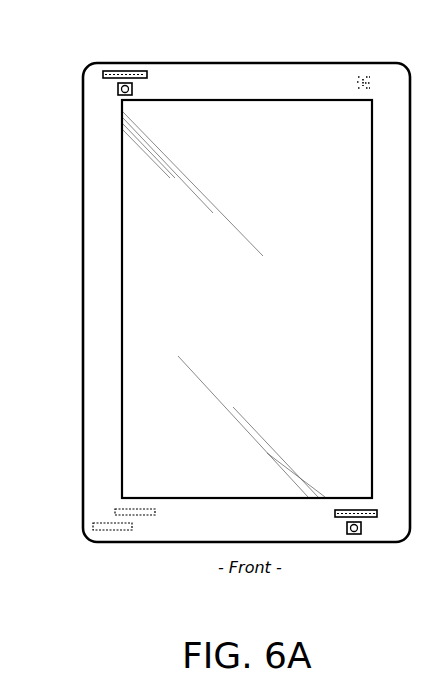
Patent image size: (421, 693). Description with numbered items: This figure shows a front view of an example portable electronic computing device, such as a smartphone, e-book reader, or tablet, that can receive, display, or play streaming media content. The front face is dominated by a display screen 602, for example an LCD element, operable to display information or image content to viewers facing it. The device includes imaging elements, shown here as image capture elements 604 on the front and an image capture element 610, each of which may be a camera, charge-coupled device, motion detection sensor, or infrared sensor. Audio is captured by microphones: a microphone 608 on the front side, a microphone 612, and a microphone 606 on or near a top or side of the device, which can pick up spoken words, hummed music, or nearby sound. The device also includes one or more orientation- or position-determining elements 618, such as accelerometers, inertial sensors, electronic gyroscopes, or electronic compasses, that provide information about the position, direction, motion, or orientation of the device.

The display screen 602 is at (122, 215).
The image capture element 604 is at (118, 88).
The microphone 606 is at (131, 71).
The microphone 608 is at (366, 518).
The image capture element 610 is at (360, 76).
The microphone 612 is at (136, 516).
The orientation- or position-determining element 618 is at (112, 530).